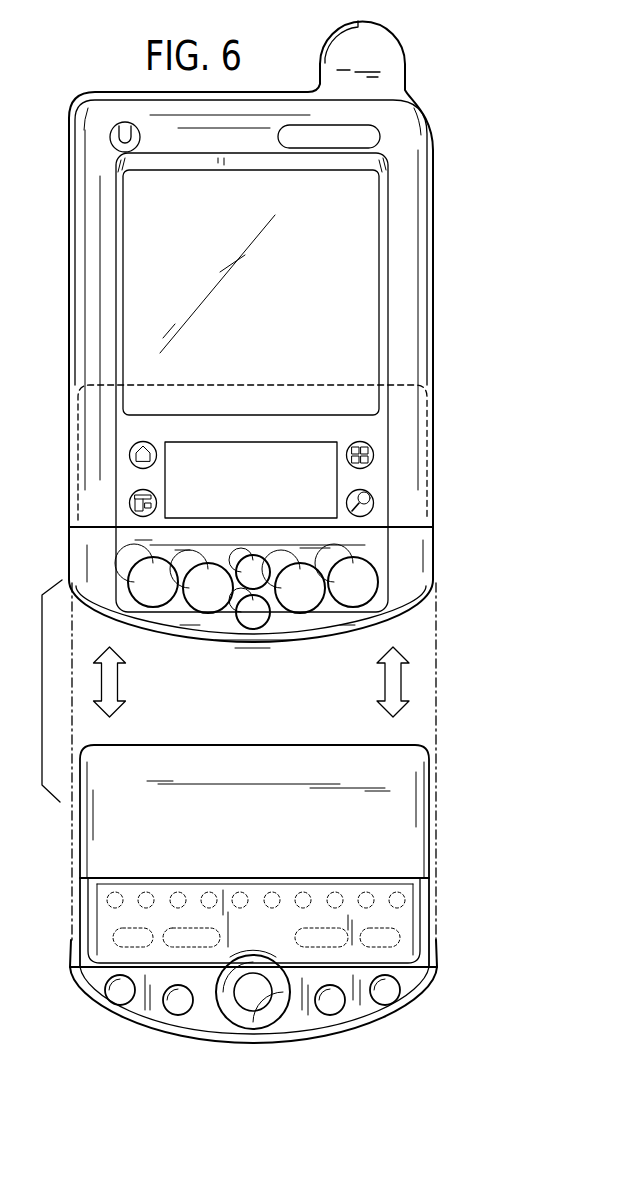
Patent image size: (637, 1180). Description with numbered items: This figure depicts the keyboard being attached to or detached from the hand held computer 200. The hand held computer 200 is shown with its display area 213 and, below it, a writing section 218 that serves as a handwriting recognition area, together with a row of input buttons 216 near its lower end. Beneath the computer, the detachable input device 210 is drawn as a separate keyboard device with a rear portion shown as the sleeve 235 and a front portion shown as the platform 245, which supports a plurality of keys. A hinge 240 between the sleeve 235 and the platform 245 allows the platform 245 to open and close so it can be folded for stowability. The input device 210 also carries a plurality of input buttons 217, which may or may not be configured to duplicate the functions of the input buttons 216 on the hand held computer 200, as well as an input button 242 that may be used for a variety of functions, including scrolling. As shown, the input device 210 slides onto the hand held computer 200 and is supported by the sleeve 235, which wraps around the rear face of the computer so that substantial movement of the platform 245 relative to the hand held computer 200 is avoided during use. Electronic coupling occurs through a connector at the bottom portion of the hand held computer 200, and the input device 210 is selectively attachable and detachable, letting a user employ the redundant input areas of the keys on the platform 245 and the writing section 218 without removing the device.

The hand held computer 200 is at (428, 72).
The display area 213 is at (295, 309).
The writing section 218 is at (265, 491).
The input buttons 216 is at (355, 602).
The detachable input device 210 is at (442, 1005).
The sleeve portion 235 is at (411, 759).
The hinge 240 is at (410, 877).
The platform 245 is at (410, 937).
The input buttons 217 is at (176, 1010).
The input button 242 is at (252, 1002).